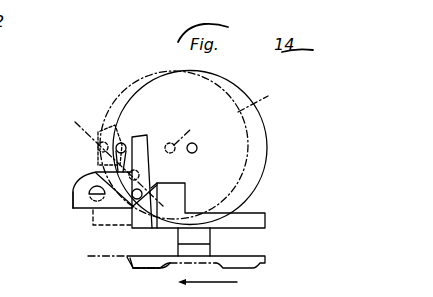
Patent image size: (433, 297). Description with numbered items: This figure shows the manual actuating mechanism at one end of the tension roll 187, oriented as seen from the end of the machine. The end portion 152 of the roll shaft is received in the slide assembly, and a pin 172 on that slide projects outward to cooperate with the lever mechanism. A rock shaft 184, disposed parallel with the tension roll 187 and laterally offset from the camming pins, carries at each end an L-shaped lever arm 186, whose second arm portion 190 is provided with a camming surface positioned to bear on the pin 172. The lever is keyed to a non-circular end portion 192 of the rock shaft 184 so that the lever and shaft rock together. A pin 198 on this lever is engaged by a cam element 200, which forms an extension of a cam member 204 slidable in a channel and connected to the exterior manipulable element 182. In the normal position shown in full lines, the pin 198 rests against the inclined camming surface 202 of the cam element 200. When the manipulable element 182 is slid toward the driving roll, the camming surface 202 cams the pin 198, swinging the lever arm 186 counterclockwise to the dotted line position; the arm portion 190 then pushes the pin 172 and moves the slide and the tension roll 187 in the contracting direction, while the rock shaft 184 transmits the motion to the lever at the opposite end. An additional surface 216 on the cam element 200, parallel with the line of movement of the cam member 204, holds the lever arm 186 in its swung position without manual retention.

The end portion of shaft 152 is at (194, 142).
The pin 172 is at (104, 146).
The manipulable element 182 is at (257, 267).
The rock shaft 184 is at (76, 208).
The lever arm 186 is at (68, 192).
The wheel 187 is at (259, 106).
The second arm portion 190 is at (142, 137).
The end portion of rock shaft 192 is at (97, 186).
The pin 198 is at (139, 190).
The cam element 200 is at (176, 198).
The camming surface 202 is at (160, 214).
The cam member 204 is at (126, 229).
The additional surface 216 is at (157, 185).